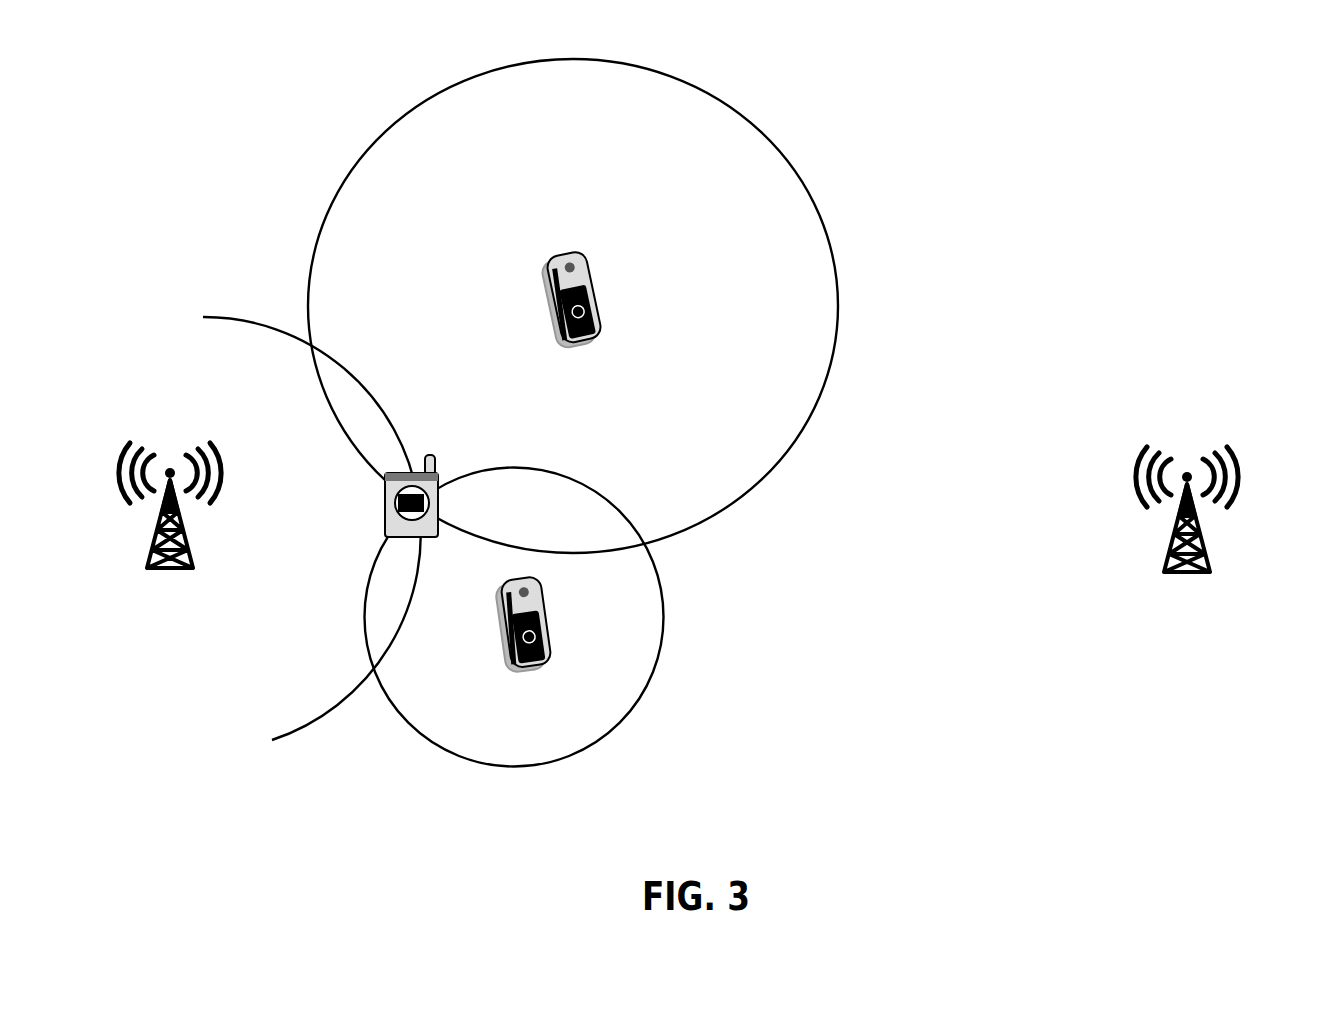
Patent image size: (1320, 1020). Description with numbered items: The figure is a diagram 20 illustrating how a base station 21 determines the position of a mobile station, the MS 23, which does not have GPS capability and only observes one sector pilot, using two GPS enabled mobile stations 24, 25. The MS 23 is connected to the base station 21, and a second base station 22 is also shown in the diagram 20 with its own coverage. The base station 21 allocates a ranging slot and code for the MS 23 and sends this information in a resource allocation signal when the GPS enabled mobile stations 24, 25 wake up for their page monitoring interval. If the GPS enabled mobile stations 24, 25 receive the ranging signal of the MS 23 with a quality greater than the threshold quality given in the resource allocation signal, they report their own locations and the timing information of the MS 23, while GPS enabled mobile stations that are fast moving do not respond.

The diagram 20 is at (1006, 139).
The base station 21 is at (192, 530).
The second base station BS2 22 is at (1202, 540).
The MS 23 is at (412, 509).
The GPS enabled mobile station 24 is at (647, 318).
The GPS enabled mobile station 25 is at (571, 646).